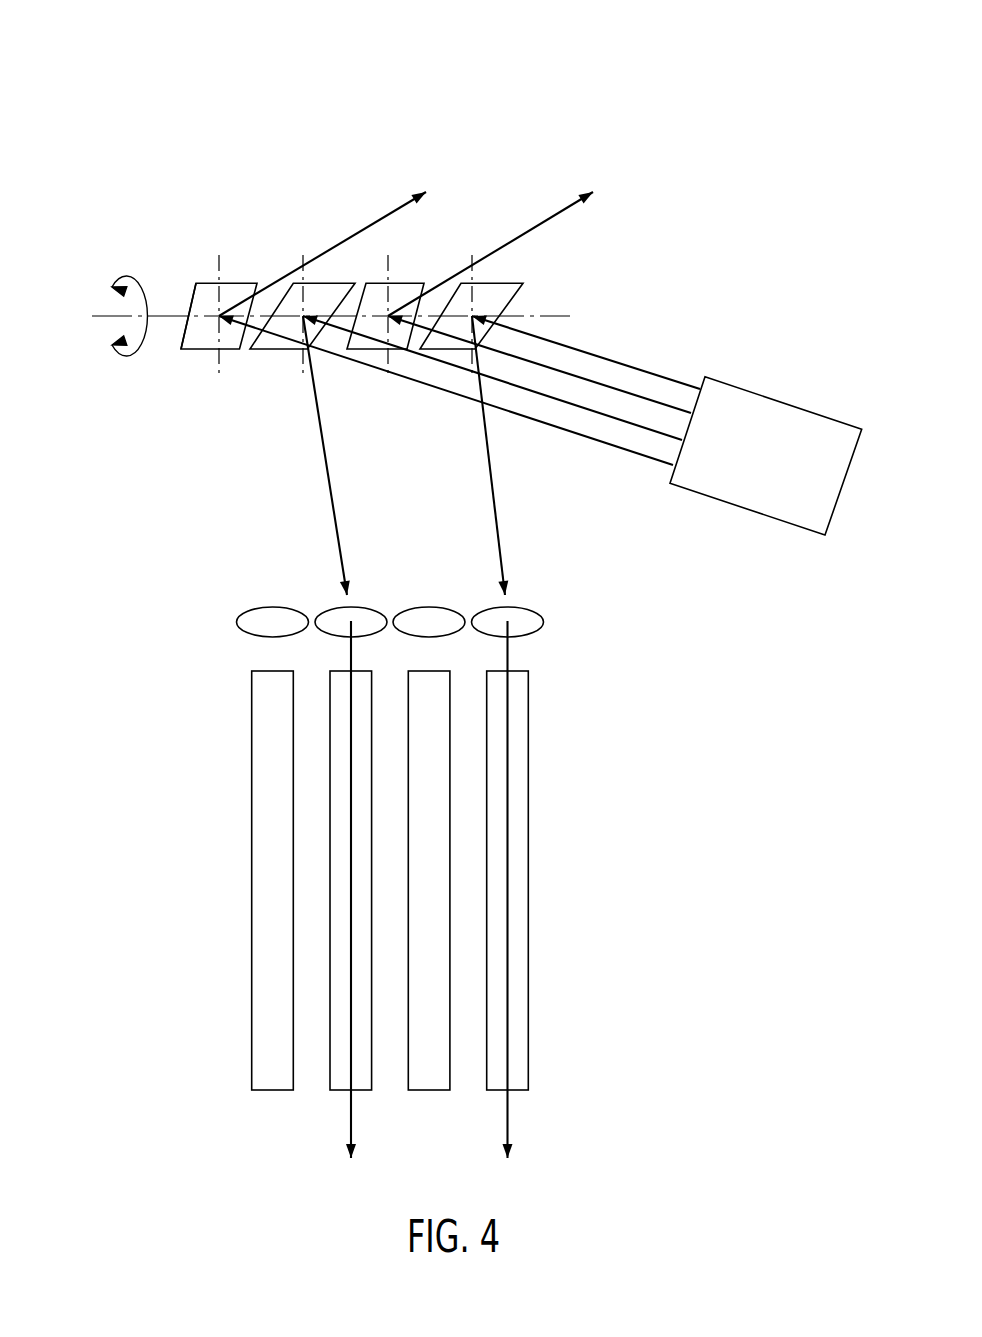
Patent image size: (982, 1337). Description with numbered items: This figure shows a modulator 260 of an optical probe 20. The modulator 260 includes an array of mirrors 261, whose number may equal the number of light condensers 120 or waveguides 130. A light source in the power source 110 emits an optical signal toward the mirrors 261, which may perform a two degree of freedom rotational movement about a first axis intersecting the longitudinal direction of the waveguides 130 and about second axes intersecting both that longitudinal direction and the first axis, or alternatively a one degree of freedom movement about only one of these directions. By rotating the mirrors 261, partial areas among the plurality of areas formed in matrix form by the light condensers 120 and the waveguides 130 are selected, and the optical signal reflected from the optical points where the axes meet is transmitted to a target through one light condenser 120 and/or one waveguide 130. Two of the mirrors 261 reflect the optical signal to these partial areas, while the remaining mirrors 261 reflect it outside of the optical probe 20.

The optical probe 20 is at (218, 122).
The modulator 260 is at (193, 277).
The mirror 261 is at (193, 347).
The power source 110 is at (787, 410).
The light condenser 120 is at (527, 613).
The waveguide 130 is at (523, 805).